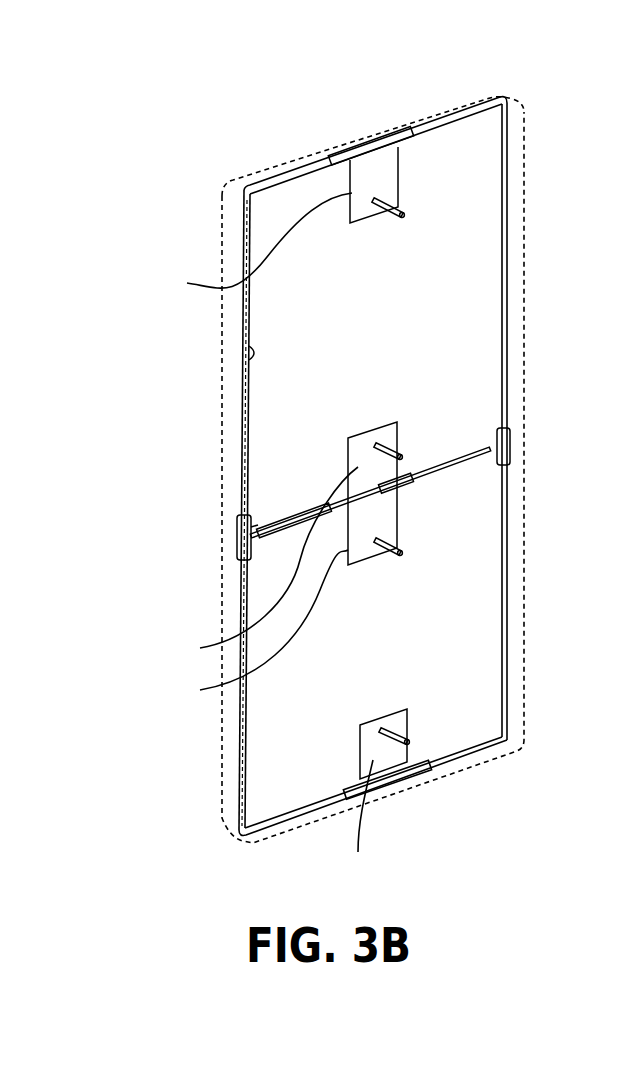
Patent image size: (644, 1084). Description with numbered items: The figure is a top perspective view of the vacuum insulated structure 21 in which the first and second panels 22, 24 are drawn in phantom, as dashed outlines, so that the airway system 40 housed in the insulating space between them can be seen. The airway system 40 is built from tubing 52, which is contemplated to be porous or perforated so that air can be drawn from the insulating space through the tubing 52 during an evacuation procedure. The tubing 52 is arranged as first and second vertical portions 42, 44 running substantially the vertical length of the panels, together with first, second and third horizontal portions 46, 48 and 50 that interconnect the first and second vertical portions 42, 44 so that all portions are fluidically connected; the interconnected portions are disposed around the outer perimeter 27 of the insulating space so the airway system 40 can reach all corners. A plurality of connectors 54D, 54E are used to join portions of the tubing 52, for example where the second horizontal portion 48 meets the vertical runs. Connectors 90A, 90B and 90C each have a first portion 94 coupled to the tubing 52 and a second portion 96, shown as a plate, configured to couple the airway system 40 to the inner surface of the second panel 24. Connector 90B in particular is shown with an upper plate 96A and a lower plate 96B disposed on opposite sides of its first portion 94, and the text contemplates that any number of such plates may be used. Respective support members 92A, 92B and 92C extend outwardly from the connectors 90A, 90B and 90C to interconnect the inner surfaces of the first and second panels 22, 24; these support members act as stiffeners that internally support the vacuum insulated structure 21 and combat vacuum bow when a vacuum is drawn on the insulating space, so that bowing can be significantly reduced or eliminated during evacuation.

The vacuum insulated structure 21 is at (190, 212).
The first panel 22 is at (243, 178).
The second panel 24 is at (300, 170).
The outer perimeter 27 is at (535, 410).
The airway system 40 is at (265, 403).
The first vertical portion 42 is at (249, 357).
The second vertical portion 44 is at (505, 247).
The first horizontal portion 46 is at (318, 168).
The second horizontal portion 48 is at (255, 512).
The third horizontal portion 50 is at (293, 807).
The tubing 52 is at (242, 722).
The connector 54D is at (265, 552).
The connector 54E is at (488, 472).
The connector 90A is at (409, 169).
The connector 90B is at (406, 419).
The connector 90C is at (421, 749).
The support member 92A is at (403, 213).
The support member 92B is at (402, 457).
The support member 92C is at (406, 740).
The first portion 94 is at (375, 148).
The second portion 96 is at (292, 536).
The upper plate 96A is at (255, 566).
The lower plate 96B is at (250, 629).